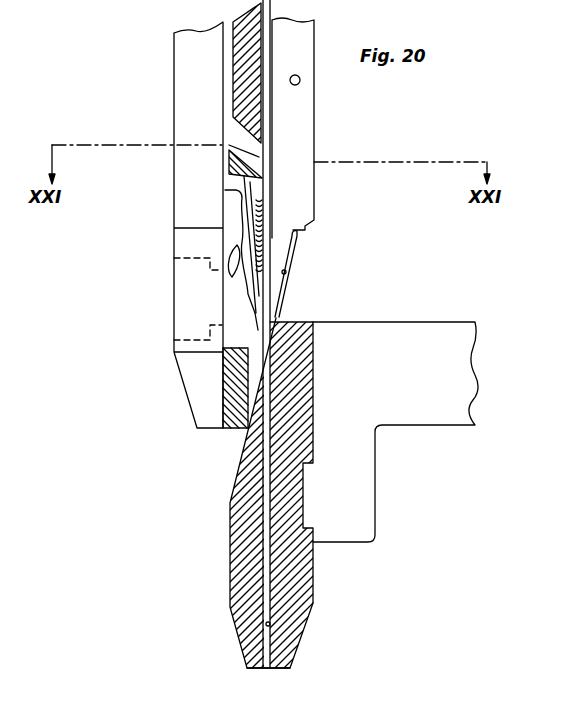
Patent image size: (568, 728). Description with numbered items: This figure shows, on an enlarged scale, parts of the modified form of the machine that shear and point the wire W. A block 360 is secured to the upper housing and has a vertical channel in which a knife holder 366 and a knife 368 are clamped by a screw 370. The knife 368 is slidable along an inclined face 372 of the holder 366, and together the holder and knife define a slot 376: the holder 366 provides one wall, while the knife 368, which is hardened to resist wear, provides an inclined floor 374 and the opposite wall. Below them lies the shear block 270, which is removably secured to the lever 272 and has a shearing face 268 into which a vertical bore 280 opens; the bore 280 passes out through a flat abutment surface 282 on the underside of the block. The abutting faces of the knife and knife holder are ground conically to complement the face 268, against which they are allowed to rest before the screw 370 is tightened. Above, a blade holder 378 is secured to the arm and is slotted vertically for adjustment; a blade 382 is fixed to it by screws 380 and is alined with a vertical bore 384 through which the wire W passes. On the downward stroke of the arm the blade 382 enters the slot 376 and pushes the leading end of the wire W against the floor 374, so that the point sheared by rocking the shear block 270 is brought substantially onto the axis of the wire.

The wire W is at (272, 12).
The shearing face 268 is at (260, 387).
The shear block 270 is at (230, 578).
The lever 272 is at (413, 374).
The vertical bore 280 is at (270, 625).
The abutment surface 282 is at (257, 668).
The block 360 is at (175, 345).
The knife holder 366 is at (236, 193).
The knife 368 is at (233, 163).
The screw 370 is at (235, 273).
The inclined face 372 is at (257, 345).
The inclined floor 374 is at (265, 292).
The slot 376 is at (286, 273).
The blade holder 378 is at (236, 21).
The screws 380 is at (300, 82).
The blade 382 is at (306, 190).
The vertical bore 384 is at (265, 32).